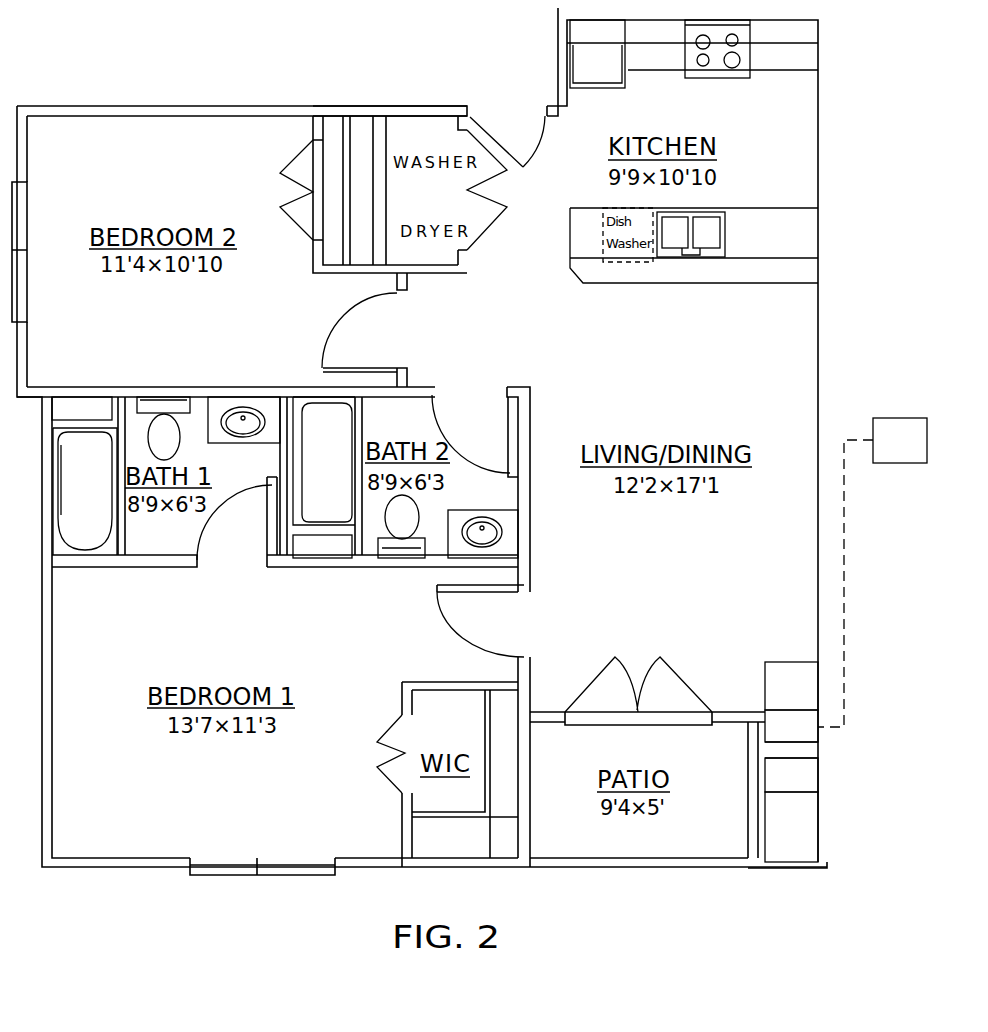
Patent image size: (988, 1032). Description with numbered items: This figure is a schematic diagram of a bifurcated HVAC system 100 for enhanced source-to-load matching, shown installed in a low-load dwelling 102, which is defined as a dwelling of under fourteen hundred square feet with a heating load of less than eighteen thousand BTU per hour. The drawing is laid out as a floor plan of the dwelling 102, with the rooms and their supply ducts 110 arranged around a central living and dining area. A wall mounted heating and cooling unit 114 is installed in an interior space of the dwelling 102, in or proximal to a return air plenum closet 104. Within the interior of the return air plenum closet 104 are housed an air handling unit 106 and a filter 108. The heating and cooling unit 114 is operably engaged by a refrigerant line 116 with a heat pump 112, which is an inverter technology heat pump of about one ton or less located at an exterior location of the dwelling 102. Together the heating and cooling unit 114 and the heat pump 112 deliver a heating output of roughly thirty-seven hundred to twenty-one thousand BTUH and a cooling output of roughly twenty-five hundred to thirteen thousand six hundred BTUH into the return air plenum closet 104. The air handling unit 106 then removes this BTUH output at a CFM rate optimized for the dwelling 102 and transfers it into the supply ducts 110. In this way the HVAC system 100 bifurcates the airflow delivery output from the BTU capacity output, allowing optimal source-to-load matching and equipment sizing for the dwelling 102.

The HVAC system 100 is at (818, 31).
The dwelling 102 is at (332, 106).
The return air plenum closet 104 is at (791, 686).
The air handling unit 106 is at (791, 827).
The filter 108 is at (791, 775).
The supply ducts 110 is at (415, 360).
The heat pump 112 is at (900, 440).
The heating and cooling unit 114 is at (791, 726).
The refrigerant line 116 is at (856, 583).